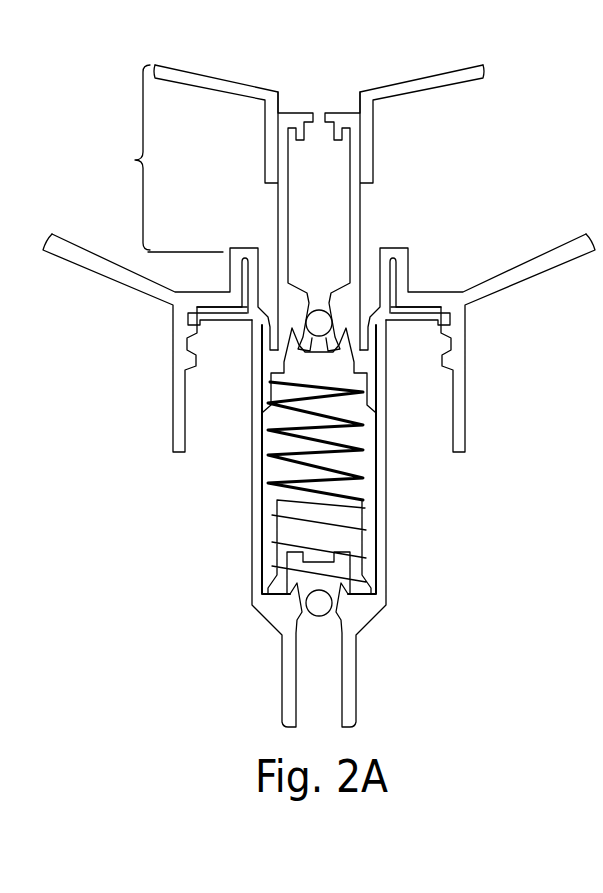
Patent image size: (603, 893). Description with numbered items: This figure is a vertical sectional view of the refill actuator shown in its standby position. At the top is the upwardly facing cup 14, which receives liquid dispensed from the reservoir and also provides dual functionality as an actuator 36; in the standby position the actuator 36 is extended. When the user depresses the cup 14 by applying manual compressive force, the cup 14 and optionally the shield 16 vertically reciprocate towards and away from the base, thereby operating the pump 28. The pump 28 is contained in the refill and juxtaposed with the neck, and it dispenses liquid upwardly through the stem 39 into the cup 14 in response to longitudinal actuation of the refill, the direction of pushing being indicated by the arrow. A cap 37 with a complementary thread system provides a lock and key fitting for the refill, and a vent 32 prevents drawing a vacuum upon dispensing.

The cup 14 is at (410, 86).
The shield 16 is at (493, 293).
The pump 28 is at (214, 528).
The vent 32 is at (252, 353).
The actuator 36 is at (159, 158).
The cap 37 is at (180, 385).
The stem 39 is at (383, 352).